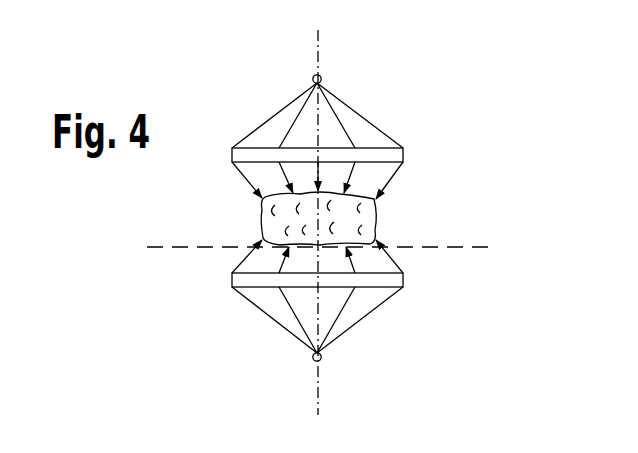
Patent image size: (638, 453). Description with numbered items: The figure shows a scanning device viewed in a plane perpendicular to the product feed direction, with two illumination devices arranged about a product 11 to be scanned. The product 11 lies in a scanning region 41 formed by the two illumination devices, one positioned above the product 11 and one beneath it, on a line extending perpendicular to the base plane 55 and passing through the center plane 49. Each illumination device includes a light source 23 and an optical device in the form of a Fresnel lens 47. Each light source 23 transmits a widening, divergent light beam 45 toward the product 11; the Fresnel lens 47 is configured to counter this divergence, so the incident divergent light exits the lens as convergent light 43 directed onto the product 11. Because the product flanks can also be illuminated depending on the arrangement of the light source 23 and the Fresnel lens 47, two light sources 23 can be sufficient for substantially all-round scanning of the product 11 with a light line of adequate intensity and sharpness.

The product 11 is at (378, 208).
The light source 23 is at (321, 76).
The scanning region 41 is at (393, 233).
The convergent light 43 is at (236, 175).
The divergent light beam 45 is at (259, 112).
The Fresnel lens 47 is at (404, 155).
The center plane 49 is at (320, 393).
The base plane 55 is at (485, 250).